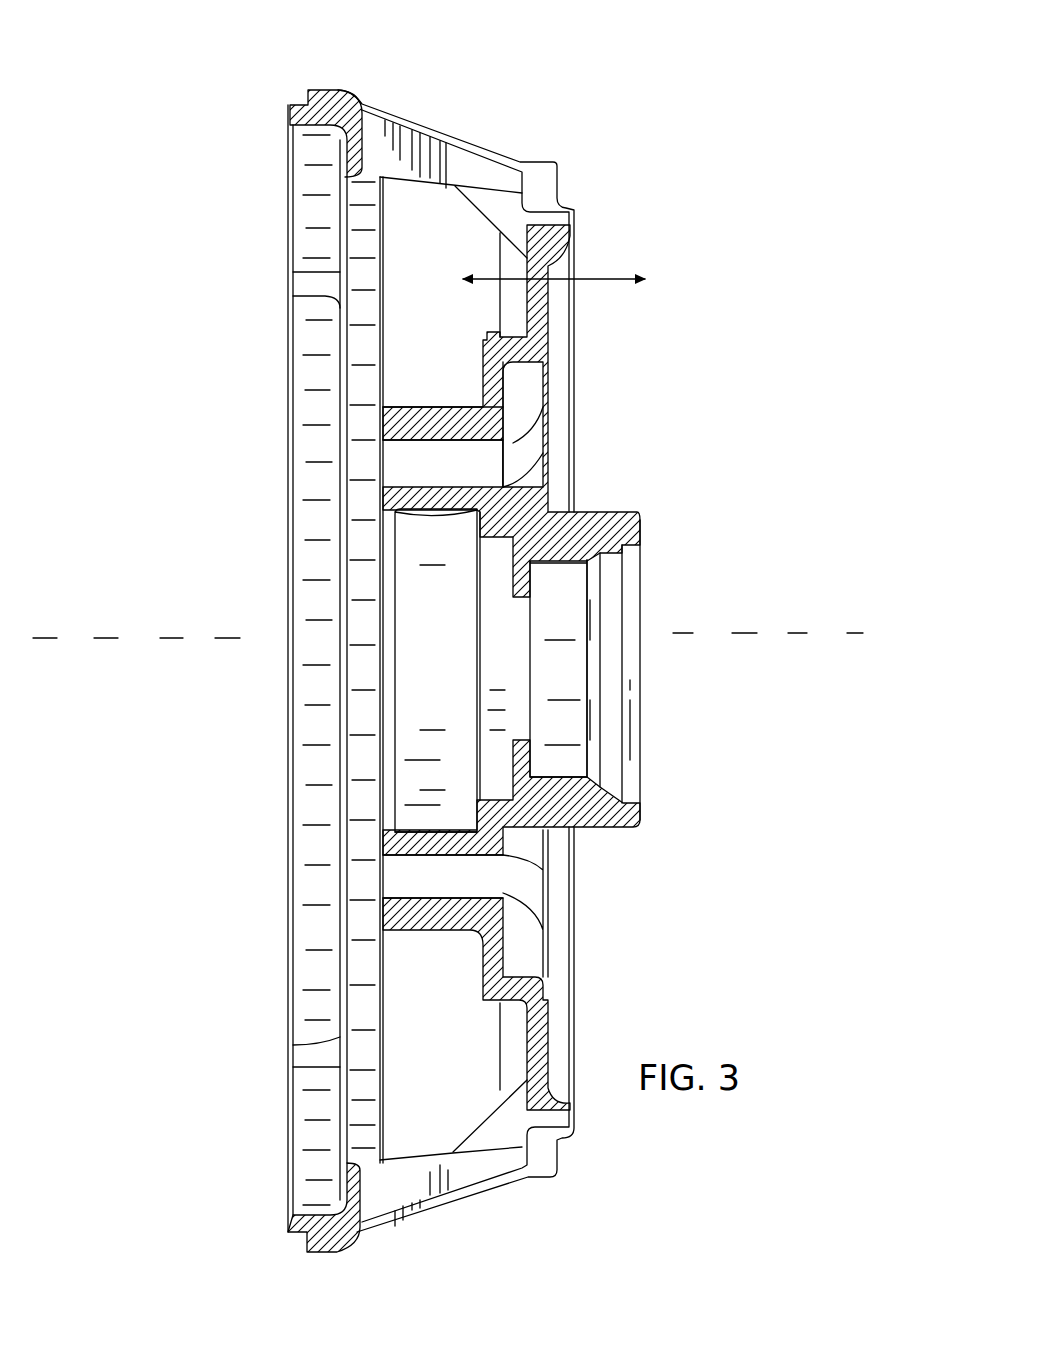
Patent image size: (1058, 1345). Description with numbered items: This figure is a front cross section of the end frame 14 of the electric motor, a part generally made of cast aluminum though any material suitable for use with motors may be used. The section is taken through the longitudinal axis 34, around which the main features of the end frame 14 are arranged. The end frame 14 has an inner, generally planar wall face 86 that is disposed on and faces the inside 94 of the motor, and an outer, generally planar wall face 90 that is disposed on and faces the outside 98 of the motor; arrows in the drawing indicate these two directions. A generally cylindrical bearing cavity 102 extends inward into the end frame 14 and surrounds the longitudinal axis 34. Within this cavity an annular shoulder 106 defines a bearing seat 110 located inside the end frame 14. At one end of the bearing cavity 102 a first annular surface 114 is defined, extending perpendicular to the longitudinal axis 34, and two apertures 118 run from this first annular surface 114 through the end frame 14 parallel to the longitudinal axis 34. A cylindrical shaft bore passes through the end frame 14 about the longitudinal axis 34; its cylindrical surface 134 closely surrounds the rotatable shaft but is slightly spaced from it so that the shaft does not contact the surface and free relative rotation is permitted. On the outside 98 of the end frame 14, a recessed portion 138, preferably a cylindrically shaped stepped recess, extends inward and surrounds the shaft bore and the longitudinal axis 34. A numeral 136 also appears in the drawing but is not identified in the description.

The end frame 14 is at (727, 72).
The longitudinal axis 34 is at (851, 633).
The inner wall face 86 is at (527, 298).
The outer wall face 90 is at (576, 358).
The inside 94 is at (495, 263).
The outside 98 is at (586, 262).
The bearing cavity 102 is at (412, 543).
The annular shoulder 106 is at (393, 520).
The bearing seat 110 is at (432, 830).
The first annular surface 114 is at (383, 428).
The apertures 118 is at (486, 460).
The cylindrical surface 134 is at (530, 608).
The counterbore 136 is at (528, 620).
The recessed portion 138 is at (620, 764).